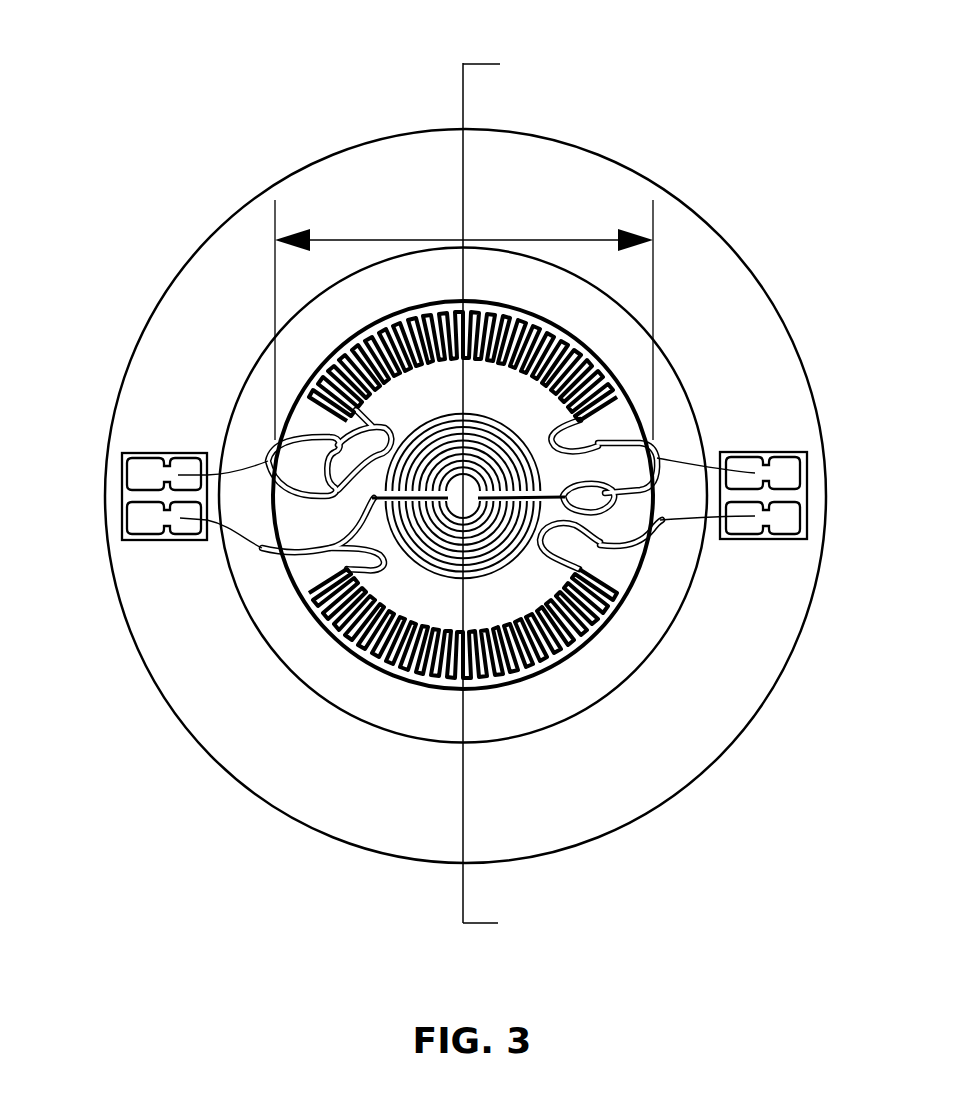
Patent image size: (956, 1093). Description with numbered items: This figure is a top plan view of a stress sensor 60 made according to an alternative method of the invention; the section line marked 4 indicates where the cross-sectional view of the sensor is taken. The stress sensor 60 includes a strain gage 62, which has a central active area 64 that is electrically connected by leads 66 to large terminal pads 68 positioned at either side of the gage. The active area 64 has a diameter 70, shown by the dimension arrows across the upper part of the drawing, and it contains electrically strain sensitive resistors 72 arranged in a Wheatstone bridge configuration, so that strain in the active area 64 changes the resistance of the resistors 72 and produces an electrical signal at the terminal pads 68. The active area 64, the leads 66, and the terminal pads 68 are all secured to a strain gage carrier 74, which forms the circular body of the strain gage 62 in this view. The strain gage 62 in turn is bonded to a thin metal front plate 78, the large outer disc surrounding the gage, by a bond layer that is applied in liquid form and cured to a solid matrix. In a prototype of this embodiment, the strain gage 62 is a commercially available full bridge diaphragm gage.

The stress sensor 60 is at (192, 90).
The strain gage 62 is at (517, 692).
The active area 64 is at (497, 588).
The leads 66 is at (280, 552).
The terminal pads 68 is at (147, 520).
The diameter 70 is at (473, 240).
The strain sensitive resistors 72 is at (417, 560).
The strain gage carrier 74 is at (318, 567).
The front plate 78 is at (410, 740).
The section line 4- 4 is at (513, 496).